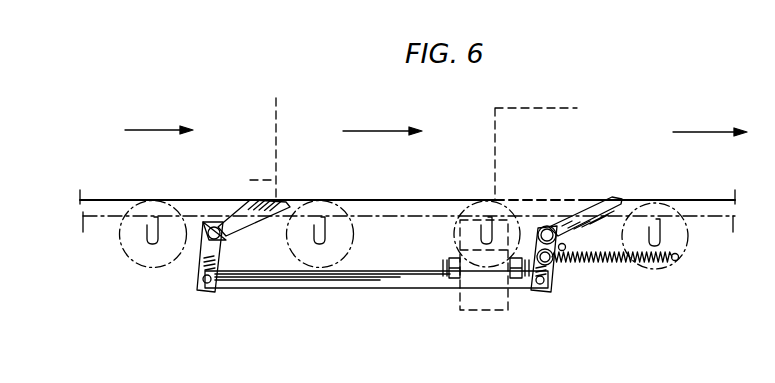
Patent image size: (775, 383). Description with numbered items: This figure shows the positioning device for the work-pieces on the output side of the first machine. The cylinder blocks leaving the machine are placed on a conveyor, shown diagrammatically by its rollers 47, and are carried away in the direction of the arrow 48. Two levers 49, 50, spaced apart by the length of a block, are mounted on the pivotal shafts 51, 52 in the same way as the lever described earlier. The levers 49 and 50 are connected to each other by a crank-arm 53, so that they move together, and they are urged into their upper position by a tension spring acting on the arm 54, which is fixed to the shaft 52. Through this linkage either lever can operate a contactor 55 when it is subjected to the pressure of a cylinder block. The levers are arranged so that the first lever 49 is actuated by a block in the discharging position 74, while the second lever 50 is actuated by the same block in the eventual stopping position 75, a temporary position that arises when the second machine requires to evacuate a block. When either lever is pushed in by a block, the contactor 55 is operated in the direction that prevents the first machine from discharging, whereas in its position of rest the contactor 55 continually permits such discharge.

The rollers 47 is at (168, 262).
The arrow 48 is at (159, 118).
The lever 49 is at (272, 213).
The lever 50 is at (589, 219).
The pivotal shaft 51 is at (221, 240).
The pivotal shaft 52 is at (548, 228).
The crank-arm 53 is at (393, 281).
The arm 54 is at (555, 252).
The contactor 55 is at (480, 300).
The discharging position 74 is at (278, 181).
The eventual stopping position 75 is at (497, 167).